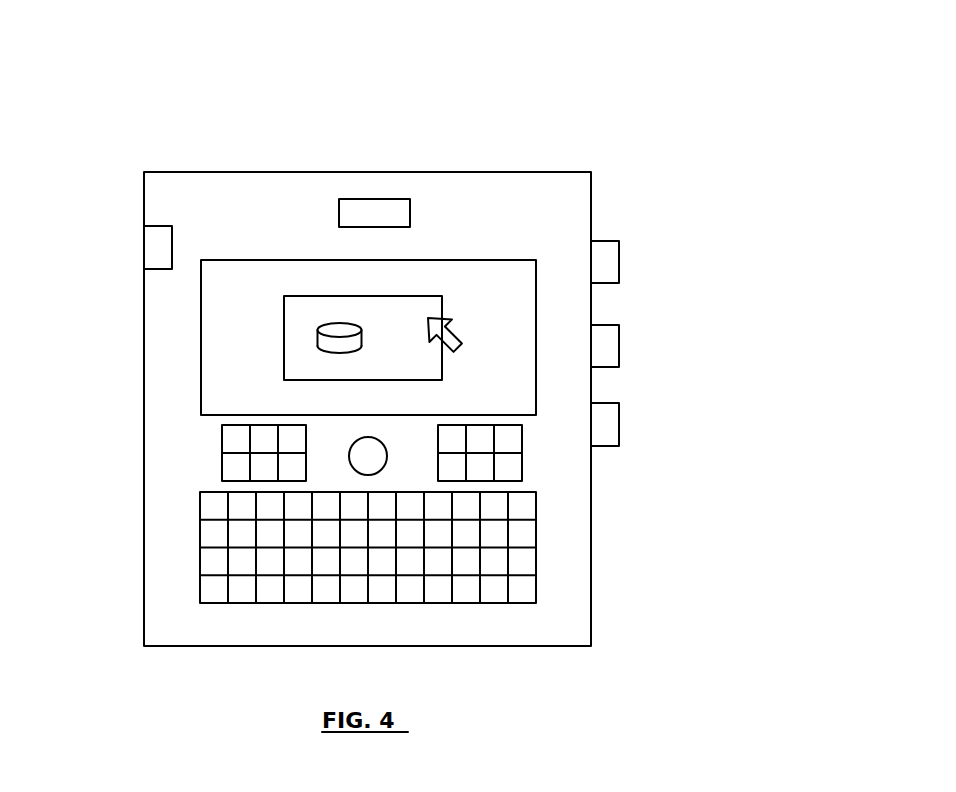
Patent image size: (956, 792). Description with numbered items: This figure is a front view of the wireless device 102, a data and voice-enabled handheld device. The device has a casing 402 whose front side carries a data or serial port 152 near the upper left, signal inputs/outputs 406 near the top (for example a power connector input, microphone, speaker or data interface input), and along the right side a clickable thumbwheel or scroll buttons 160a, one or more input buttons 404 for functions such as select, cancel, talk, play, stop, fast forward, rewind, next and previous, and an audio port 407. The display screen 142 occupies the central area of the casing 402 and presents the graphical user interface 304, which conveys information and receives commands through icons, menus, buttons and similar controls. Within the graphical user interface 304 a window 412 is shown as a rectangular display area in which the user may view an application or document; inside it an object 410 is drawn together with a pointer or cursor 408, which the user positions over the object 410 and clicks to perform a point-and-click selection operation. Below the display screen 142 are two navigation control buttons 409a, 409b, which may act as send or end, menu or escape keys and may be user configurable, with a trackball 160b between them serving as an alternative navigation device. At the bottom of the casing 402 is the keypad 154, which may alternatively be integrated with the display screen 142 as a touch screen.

The wireless device 102 is at (557, 82).
The casing 402 is at (257, 200).
The data or serial port 152 is at (158, 247).
The signal inputs/outputs 406 is at (380, 198).
The display screen 142 is at (200, 297).
The graphical user interface 304 is at (215, 323).
The object 410 is at (317, 338).
The window 412 is at (408, 311).
The pointer or cursor 408 is at (462, 351).
The clickable thumbwheel or scroll buttons 160a is at (619, 262).
The input buttons 404 is at (619, 348).
The audio port 407 is at (619, 430).
The navigation control button 409a is at (222, 435).
The navigation control button 409b is at (522, 447).
The trackball 160b is at (375, 472).
The keypad 154 is at (536, 533).